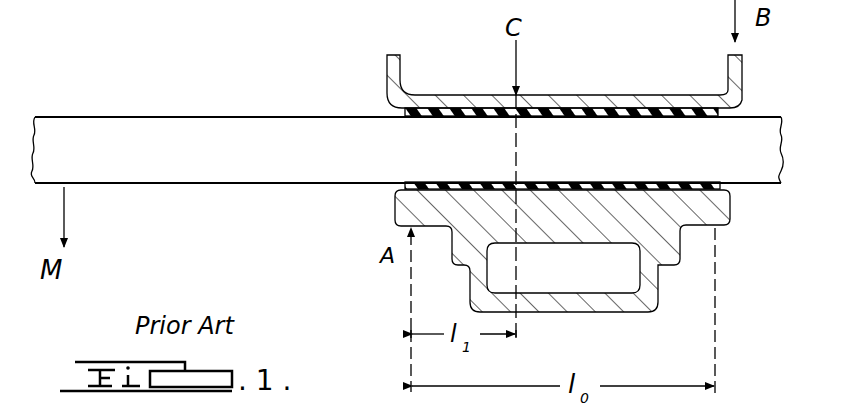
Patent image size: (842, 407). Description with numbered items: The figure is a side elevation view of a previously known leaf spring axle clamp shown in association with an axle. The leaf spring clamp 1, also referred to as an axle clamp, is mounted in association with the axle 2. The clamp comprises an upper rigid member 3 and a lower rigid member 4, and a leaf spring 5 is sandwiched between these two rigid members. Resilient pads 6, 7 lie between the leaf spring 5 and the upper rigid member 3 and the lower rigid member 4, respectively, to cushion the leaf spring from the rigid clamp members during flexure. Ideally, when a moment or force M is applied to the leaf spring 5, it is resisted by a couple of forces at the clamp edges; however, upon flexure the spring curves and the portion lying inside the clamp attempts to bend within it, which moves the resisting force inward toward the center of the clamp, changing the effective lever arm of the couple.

The leaf spring clamp 1 is at (357, 95).
The axle 2 is at (652, 300).
The upper rigid member 3 is at (736, 73).
The lower rigid member 4 is at (731, 215).
The leaf spring 5 is at (268, 186).
The resilient pad 6 is at (731, 105).
The resilient pad 7 is at (725, 187).